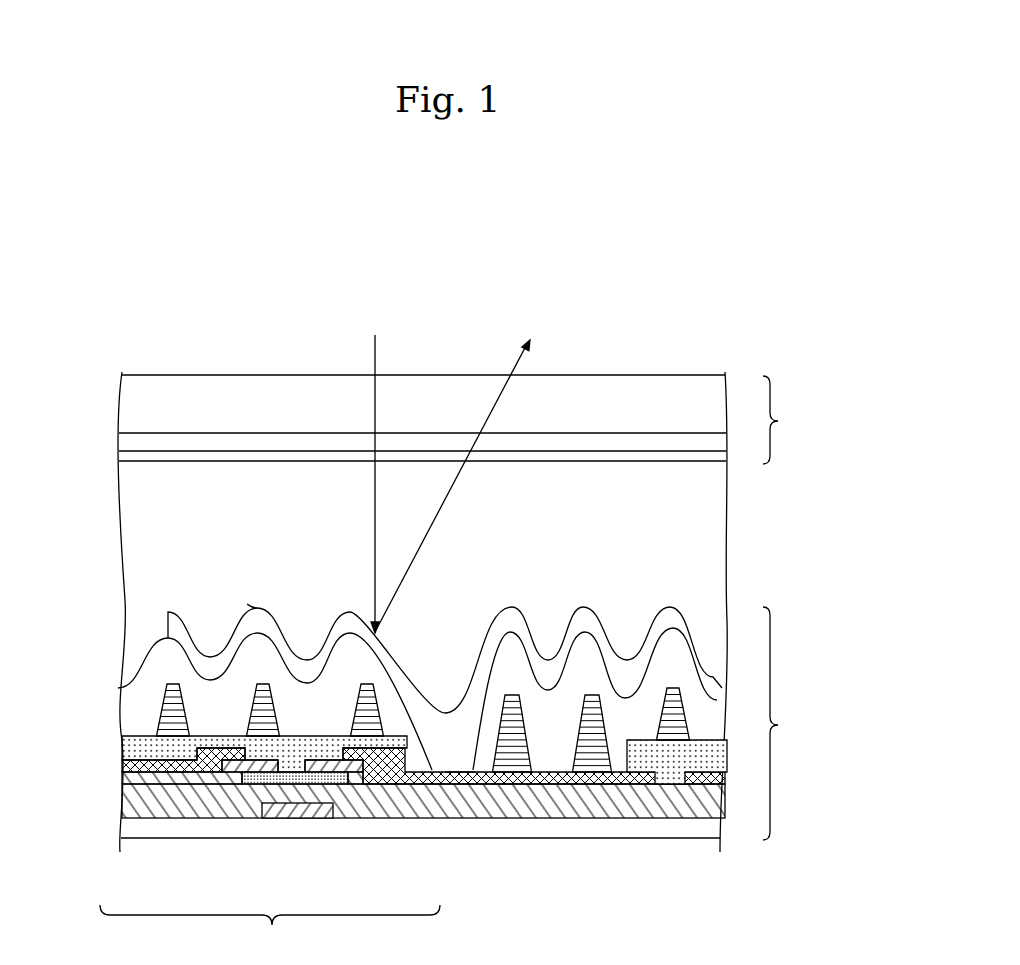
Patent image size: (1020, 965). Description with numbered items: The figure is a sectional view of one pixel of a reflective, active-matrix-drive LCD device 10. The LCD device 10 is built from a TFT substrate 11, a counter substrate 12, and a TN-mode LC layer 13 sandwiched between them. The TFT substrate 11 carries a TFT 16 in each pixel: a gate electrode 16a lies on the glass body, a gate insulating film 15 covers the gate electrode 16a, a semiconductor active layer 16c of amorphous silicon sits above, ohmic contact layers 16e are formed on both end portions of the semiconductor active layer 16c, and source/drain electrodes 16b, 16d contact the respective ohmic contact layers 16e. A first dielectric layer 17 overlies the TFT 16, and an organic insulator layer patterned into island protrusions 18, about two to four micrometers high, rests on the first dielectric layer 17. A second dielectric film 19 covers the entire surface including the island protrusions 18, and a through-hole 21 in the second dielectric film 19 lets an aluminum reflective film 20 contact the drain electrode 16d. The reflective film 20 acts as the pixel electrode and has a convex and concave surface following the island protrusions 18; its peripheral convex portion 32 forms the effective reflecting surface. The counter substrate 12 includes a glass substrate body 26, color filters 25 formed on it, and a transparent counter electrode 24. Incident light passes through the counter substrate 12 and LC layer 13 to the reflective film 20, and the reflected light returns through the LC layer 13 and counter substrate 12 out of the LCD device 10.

The LCD device 10 is at (767, 287).
The TFT substrate 11 is at (786, 723).
The counter substrate 12 is at (786, 420).
The TN-mode LC layer 13 is at (657, 520).
The gate insulating film 15 is at (547, 800).
The TFT 16 is at (412, 852).
The gate electrode 16a is at (315, 812).
The source/drain electrode 16b is at (145, 770).
The semiconductor active layer 16c is at (255, 780).
The drain electrode 16d is at (395, 780).
The ohmic contact layer 16e is at (207, 778).
The first dielectric layer 17 is at (122, 752).
The island protrusion 18 is at (155, 718).
The second dielectric film 19 is at (140, 670).
The reflective film 20 is at (679, 621).
The through-hole 21 is at (475, 770).
The transparent counter electrode 24 is at (138, 458).
The color filters 25 is at (138, 442).
The glass substrate body 26 is at (138, 410).
The convex portion 32 is at (257, 606).